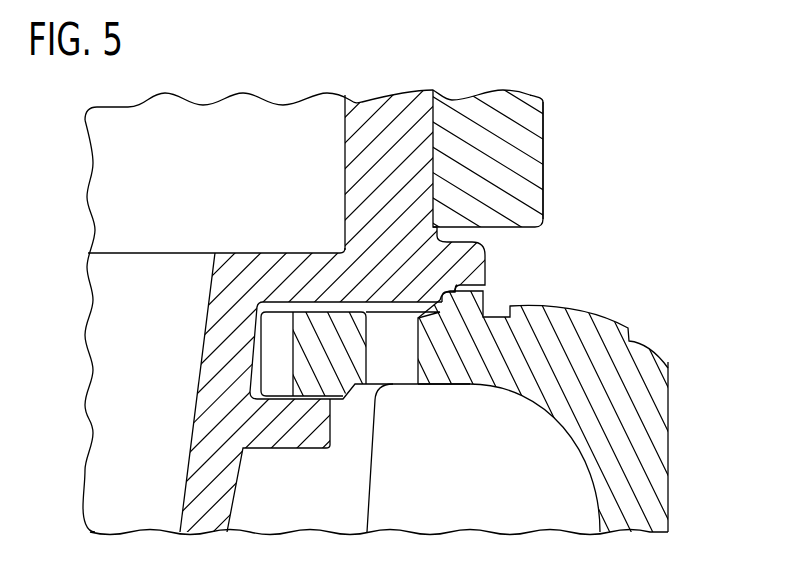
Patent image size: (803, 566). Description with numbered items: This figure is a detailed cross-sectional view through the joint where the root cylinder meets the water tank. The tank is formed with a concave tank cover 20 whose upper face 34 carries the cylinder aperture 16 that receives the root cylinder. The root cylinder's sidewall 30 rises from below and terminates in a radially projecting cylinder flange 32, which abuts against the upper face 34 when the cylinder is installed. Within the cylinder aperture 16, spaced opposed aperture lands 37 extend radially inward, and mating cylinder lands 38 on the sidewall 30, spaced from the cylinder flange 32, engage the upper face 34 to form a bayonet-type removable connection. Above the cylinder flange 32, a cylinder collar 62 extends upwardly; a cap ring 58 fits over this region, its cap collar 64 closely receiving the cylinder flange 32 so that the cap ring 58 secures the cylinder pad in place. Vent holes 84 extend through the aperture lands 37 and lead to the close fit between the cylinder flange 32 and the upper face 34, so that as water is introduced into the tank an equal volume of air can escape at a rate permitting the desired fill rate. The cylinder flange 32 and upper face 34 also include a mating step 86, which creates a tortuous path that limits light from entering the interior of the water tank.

The cylinder aperture 16 is at (275, 360).
The tank cover 20 is at (670, 423).
The sidewall 30 is at (196, 424).
The cylinder flange 32 is at (295, 282).
The upper face 34 is at (567, 302).
The aperture lands 37 is at (317, 346).
The cylinder lands 38 is at (292, 452).
The cap ring 58 is at (518, 142).
The cylinder collar 62 is at (377, 152).
The cap collar 64 is at (522, 176).
The vent holes 84 is at (392, 352).
The mating step 86 is at (445, 290).